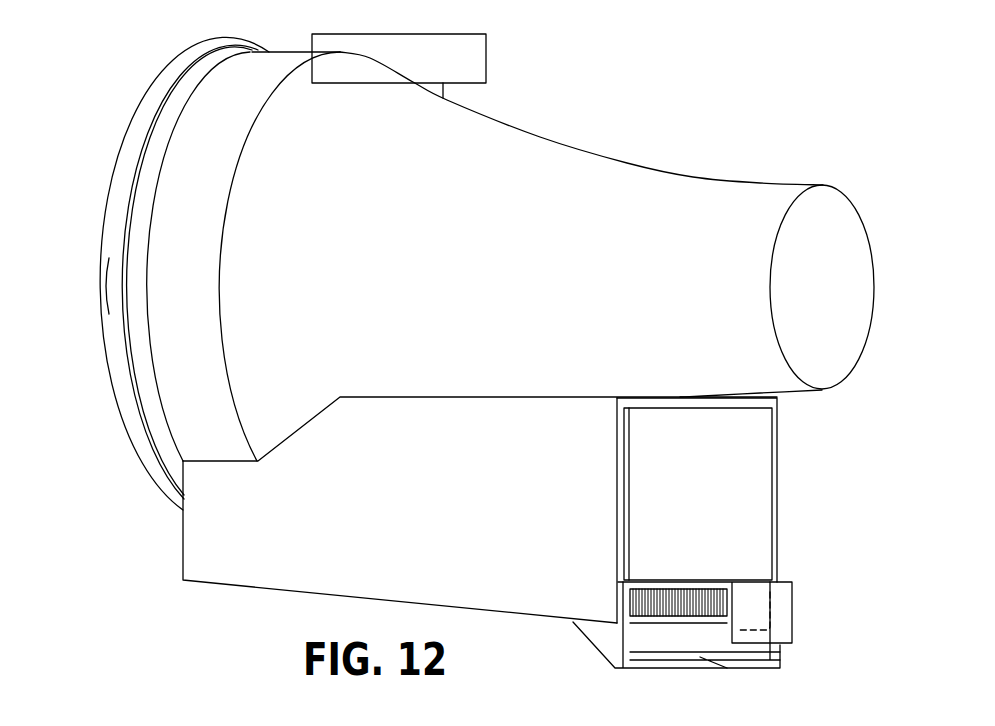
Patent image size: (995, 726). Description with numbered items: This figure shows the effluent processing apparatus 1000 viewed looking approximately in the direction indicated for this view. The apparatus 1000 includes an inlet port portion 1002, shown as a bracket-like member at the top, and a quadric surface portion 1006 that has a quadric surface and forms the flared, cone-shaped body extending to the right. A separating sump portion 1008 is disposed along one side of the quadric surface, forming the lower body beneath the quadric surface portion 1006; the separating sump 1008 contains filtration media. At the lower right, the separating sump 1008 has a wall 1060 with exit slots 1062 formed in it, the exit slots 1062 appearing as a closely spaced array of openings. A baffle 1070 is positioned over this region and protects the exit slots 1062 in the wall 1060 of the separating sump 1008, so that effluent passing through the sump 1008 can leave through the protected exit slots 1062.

The effluent processing apparatus 1000 is at (112, 112).
The inlet port portion 1002 is at (436, 35).
The quadric surface portion 1006 is at (632, 217).
The separating sump portion 1008 is at (265, 563).
The baffle 1070 is at (792, 596).
The wall 1060 is at (692, 620).
The exit slots 1062 is at (680, 608).